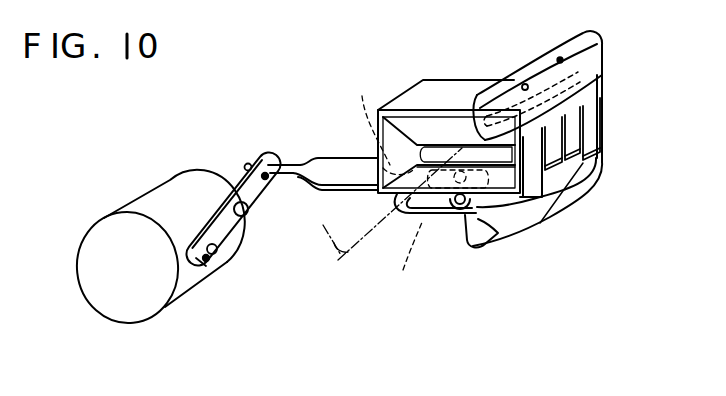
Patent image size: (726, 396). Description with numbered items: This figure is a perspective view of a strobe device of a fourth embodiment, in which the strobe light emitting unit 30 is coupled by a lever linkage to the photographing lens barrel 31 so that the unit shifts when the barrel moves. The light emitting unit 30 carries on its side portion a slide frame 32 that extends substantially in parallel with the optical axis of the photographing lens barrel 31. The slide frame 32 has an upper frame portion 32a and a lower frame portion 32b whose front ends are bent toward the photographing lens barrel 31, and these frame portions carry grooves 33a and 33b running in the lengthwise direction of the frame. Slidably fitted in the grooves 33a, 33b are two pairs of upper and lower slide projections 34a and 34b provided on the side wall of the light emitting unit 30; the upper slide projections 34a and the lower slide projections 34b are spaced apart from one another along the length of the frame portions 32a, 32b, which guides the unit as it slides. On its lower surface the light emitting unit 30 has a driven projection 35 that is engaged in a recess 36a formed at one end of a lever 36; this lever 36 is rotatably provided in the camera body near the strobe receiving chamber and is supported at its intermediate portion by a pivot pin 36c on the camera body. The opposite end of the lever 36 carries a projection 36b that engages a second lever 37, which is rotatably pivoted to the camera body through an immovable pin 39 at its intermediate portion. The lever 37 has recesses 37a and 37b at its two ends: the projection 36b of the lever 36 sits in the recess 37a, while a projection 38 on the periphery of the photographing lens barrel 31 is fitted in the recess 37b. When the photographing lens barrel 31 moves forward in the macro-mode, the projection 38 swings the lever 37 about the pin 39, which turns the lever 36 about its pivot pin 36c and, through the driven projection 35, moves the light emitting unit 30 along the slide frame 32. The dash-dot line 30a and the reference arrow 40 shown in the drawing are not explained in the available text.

The light emitting unit 30 is at (445, 105).
The pivot axis 30a is at (387, 204).
The photographing lens barrel 31 is at (185, 288).
The slide frame 32 is at (577, 148).
The upper frame portion 32a is at (550, 63).
The lower frame portion 32b is at (552, 212).
The groove 33a is at (493, 100).
The groove 33b is at (563, 185).
The upper slide projections 34a is at (598, 80).
The lower slide projections 34b is at (595, 162).
The driven projection 35 is at (457, 205).
The lever 36 is at (332, 172).
The recess 36a is at (400, 258).
The projection 36b is at (281, 162).
The pivot pin 36c is at (367, 115).
The lever 37 is at (232, 234).
The recess 37a is at (264, 186).
The recess 37b is at (213, 270).
The projection 38 is at (220, 263).
The immovable pin 39 is at (227, 203).
The clamping device 40 is at (497, 184).